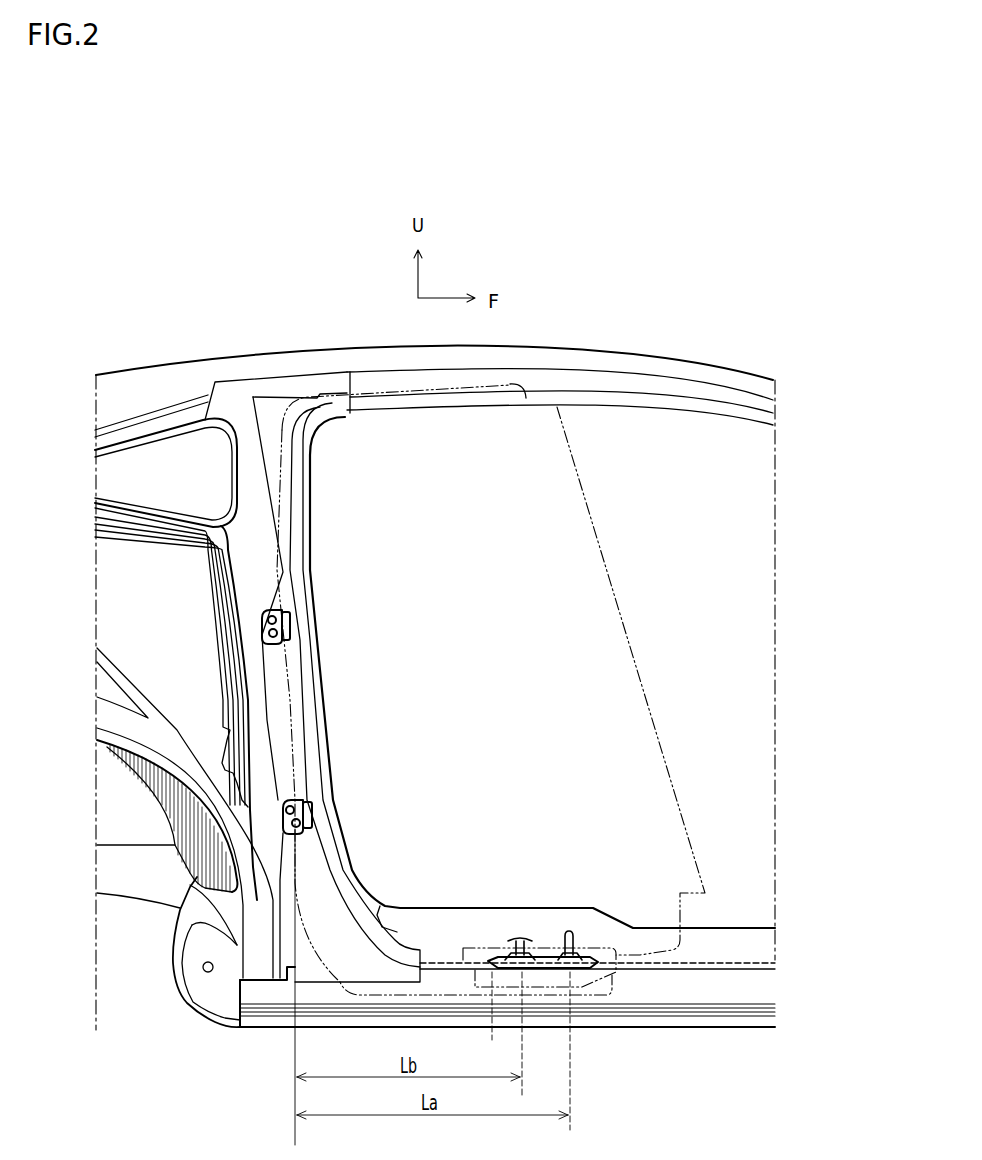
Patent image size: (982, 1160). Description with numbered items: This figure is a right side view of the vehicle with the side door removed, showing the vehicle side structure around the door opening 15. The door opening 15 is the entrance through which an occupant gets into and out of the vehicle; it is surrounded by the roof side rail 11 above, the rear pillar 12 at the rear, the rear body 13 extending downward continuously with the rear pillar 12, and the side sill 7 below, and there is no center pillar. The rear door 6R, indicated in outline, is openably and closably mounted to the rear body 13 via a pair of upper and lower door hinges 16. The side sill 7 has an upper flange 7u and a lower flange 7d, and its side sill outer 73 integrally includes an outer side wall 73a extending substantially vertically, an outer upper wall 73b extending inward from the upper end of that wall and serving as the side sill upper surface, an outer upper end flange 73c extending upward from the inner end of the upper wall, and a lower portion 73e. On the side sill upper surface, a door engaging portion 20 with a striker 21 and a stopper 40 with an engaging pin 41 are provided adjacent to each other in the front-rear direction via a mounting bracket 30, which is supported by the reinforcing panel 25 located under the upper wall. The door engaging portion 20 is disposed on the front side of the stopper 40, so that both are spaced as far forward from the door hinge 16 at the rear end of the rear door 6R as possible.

The roof side rail 11 is at (612, 347).
The rear pillar 12 is at (243, 472).
The rear body 13 is at (247, 681).
The door opening 15 is at (492, 621).
The door hinge 16 is at (296, 625).
The rear door 6R is at (601, 520).
The side sill 7 is at (542, 981).
The upper flange 7u is at (763, 925).
The lower flange 7d is at (729, 1028).
The side sill outer 73 is at (542, 987).
The outer side wall 73a is at (770, 990).
The outer upper wall 73b is at (723, 963).
The outer upper end flange 73c is at (768, 948).
The side sill outer lower flange 73e is at (770, 1020).
The reinforcing panel 25 is at (500, 1018).
The mounting bracket 30 is at (547, 958).
The stopper 40 is at (502, 914).
The engaging pin 41 is at (518, 938).
The door engaging portion 20 is at (585, 914).
The striker 21 is at (570, 935).